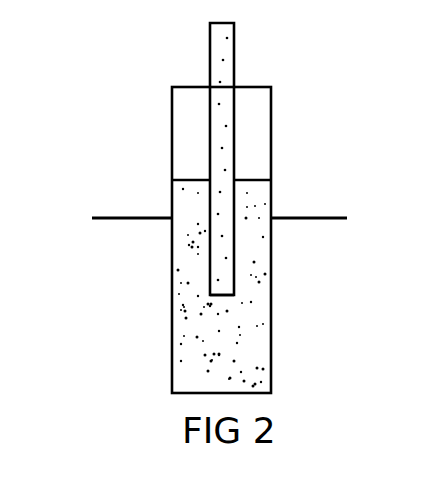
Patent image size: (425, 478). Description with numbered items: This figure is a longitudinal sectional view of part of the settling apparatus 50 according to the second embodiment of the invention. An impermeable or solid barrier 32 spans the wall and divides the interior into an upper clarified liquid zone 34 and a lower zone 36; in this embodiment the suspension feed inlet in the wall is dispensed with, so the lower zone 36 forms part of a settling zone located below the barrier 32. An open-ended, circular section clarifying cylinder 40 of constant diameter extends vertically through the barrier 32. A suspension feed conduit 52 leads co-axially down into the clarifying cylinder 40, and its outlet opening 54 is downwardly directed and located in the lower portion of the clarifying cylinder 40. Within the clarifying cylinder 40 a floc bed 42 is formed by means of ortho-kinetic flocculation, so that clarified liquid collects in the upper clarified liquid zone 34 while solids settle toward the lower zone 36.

The barrier 32 is at (127, 218).
The upper clarified liquid zone 34 is at (100, 204).
The lower zone 36 is at (105, 280).
The clarifying cylinder 40 is at (172, 147).
The floc bed 42 is at (252, 207).
The settling apparatus 50 is at (368, 218).
The suspension feed conduit 52 is at (235, 53).
The outlet opening 54 is at (218, 293).